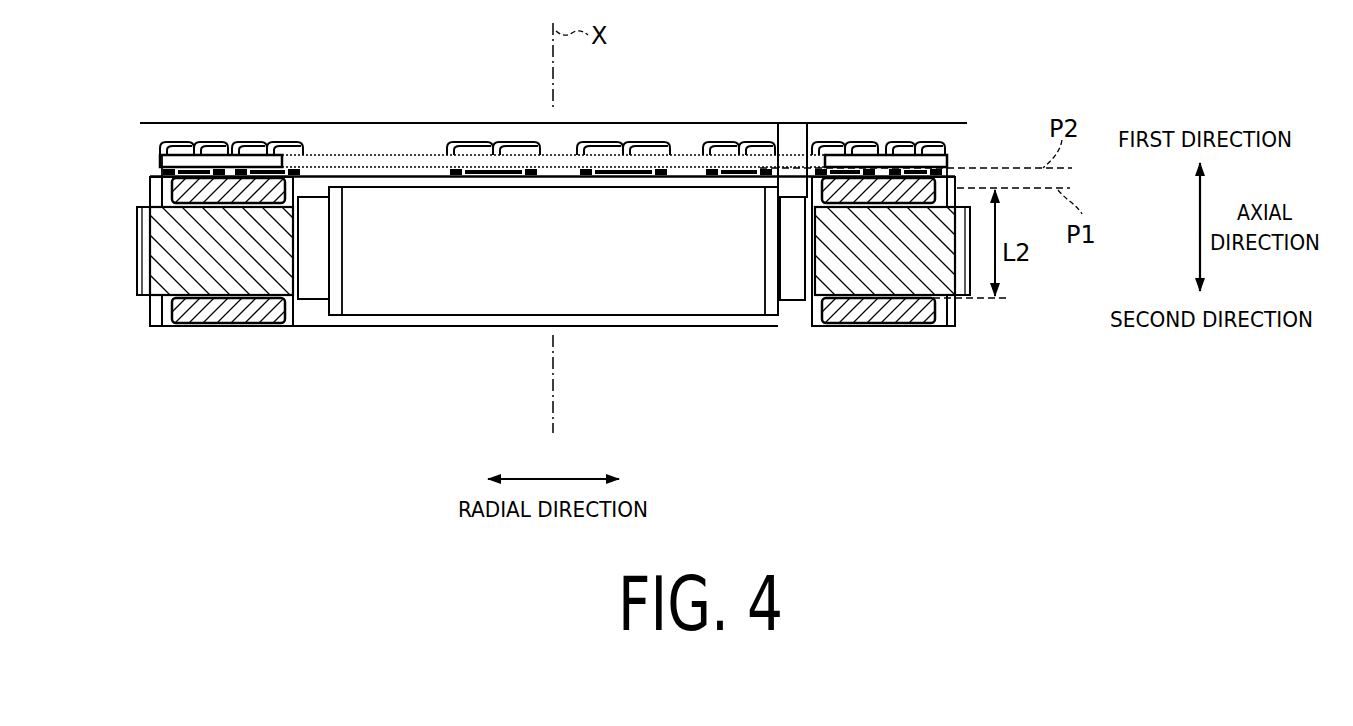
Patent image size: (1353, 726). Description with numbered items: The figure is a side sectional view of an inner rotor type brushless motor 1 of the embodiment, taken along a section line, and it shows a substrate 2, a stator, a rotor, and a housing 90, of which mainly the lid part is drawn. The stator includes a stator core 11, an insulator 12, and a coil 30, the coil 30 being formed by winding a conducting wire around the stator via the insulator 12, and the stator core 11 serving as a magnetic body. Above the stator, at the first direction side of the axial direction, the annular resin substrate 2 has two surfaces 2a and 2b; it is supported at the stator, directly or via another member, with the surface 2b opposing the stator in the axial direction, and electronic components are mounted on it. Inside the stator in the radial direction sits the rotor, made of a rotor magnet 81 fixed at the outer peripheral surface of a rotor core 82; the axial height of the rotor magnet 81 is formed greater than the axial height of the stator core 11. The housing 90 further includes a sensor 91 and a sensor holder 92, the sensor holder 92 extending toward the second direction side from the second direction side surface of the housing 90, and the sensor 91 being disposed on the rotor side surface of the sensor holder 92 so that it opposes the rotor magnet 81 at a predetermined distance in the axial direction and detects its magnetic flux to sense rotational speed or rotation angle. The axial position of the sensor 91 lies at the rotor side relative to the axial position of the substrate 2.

The motor 1 is at (176, 68).
The substrate 2 is at (962, 140).
The surface 2a is at (883, 152).
The surface 2b is at (940, 200).
The stator core 11 is at (173, 250).
The insulator 12 is at (165, 194).
The coil 30 is at (228, 192).
The rotor magnet 81 is at (397, 290).
The rotor core 82 is at (316, 290).
The housing 90 is at (322, 122).
The sensor 91 is at (792, 183).
The sensor holder 92 is at (793, 128).